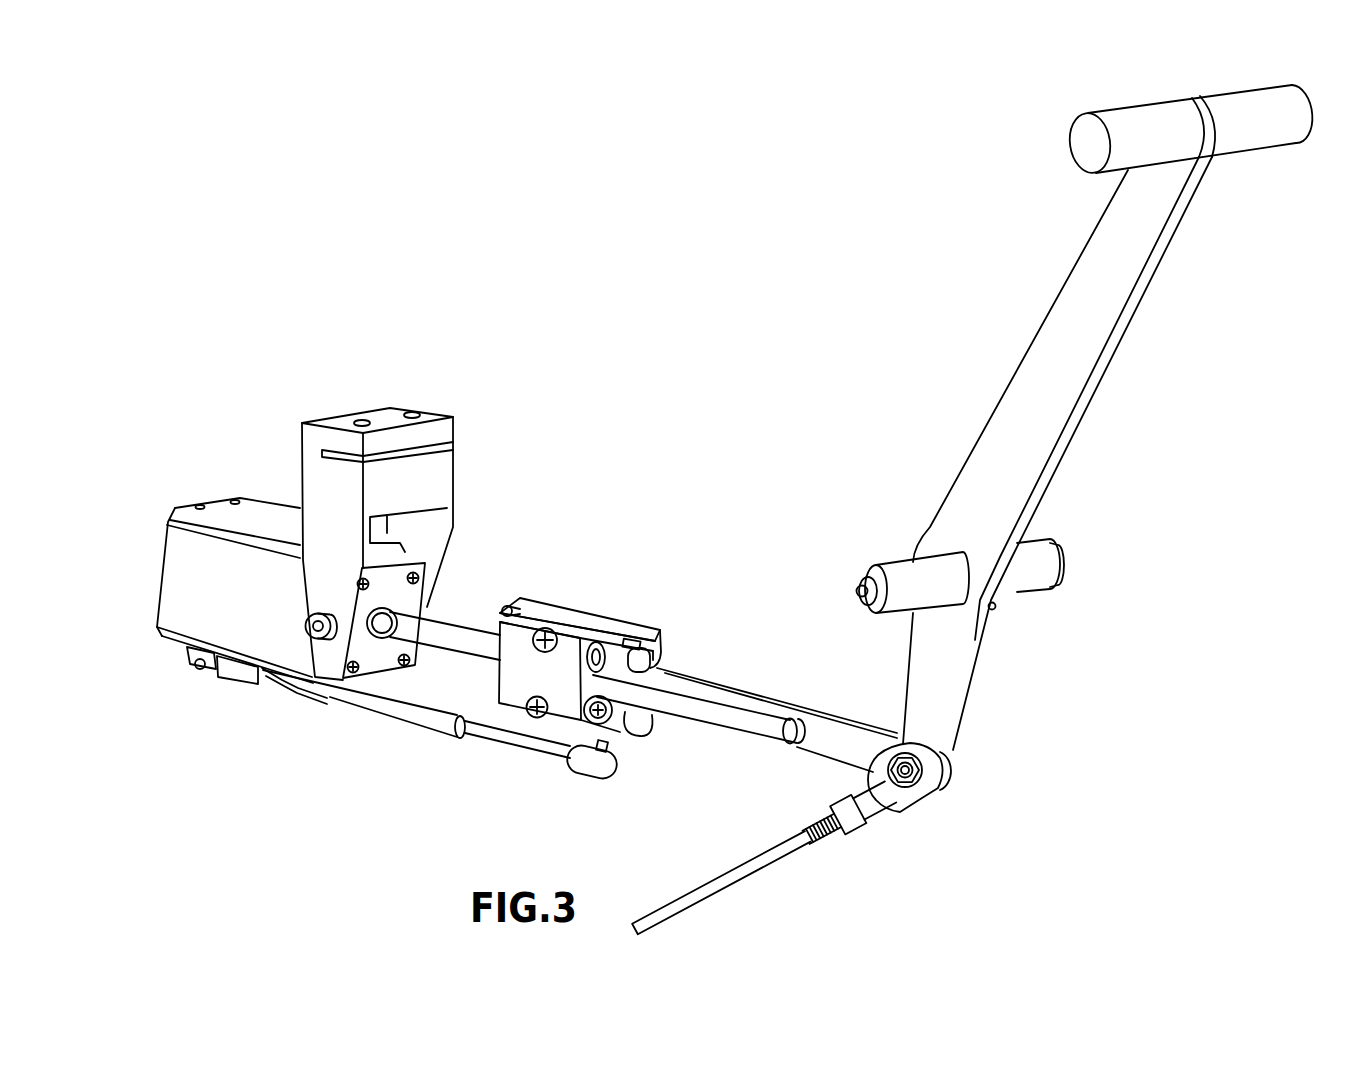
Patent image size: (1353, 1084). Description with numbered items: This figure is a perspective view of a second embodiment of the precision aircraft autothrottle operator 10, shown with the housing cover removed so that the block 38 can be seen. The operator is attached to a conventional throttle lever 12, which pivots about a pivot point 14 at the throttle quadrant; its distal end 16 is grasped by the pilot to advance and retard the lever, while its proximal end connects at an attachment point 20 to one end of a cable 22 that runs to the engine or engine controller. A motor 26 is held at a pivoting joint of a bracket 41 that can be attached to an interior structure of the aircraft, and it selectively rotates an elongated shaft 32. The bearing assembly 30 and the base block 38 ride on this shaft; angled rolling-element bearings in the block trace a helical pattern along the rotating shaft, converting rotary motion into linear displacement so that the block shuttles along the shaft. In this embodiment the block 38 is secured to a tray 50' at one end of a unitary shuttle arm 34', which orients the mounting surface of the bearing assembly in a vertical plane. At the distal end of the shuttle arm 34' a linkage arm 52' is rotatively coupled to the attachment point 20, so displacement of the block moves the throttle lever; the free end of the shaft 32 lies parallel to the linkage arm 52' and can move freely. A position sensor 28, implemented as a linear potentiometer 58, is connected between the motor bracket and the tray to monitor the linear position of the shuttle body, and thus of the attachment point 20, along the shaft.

The autothrottle operator system 10 is at (665, 305).
The throttle lever 12 is at (1153, 307).
The pivot point 14 is at (1040, 548).
The distal end 16 is at (1203, 103).
The attachment point 20 is at (906, 781).
The cable 22 is at (767, 857).
The motor 26 is at (173, 583).
The position sensor 28 is at (298, 708).
The bearing assembly 30 is at (645, 607).
The shaft 32 is at (446, 634).
The shuttle arm 34' is at (777, 678).
The base block 38 is at (562, 637).
The bracket 41 is at (340, 420).
The tray 50' is at (580, 601).
The linkage arm 52' is at (835, 717).
The linear potentiometer 58 is at (391, 712).